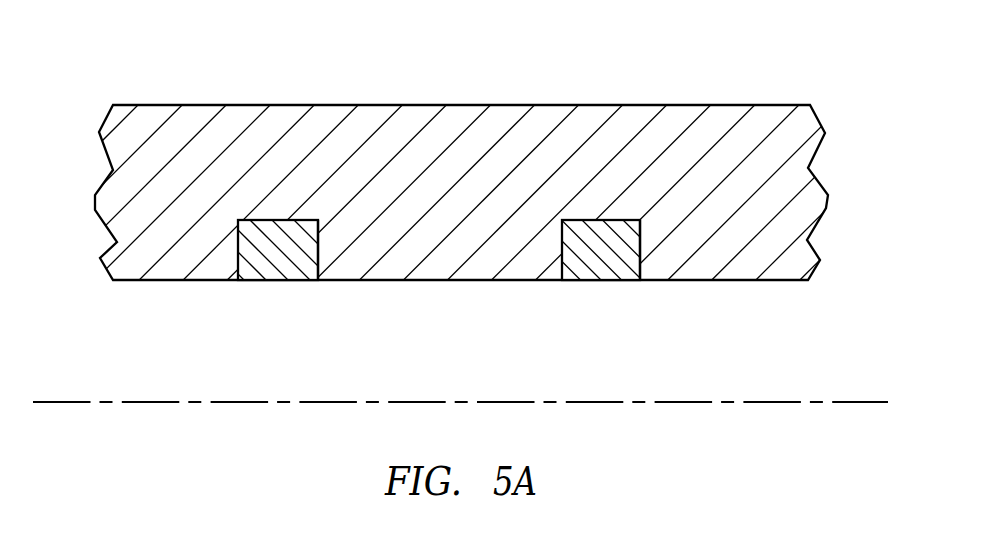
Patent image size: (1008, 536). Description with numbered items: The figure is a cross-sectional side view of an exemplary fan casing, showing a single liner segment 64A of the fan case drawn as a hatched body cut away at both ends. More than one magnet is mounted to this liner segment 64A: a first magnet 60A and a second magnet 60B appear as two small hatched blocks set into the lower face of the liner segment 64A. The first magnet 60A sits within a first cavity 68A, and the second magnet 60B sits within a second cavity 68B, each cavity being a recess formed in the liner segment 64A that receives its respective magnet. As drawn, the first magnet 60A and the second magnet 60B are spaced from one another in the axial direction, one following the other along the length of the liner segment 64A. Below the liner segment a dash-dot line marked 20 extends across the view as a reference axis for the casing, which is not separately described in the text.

The liner segment 64A is at (703, 105).
The first magnet 60A is at (272, 272).
The second magnet 60B is at (603, 268).
The first cavity 68A is at (320, 242).
The second cavity 68B is at (642, 242).
The reference plane 20 is at (858, 400).